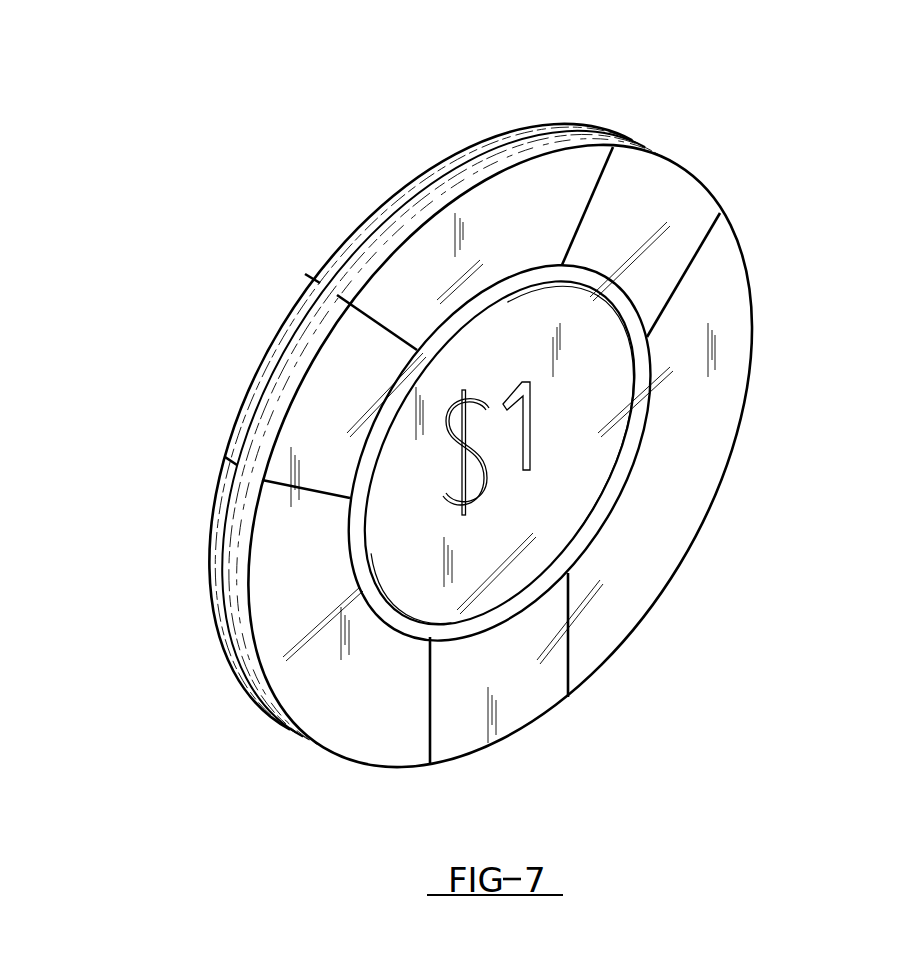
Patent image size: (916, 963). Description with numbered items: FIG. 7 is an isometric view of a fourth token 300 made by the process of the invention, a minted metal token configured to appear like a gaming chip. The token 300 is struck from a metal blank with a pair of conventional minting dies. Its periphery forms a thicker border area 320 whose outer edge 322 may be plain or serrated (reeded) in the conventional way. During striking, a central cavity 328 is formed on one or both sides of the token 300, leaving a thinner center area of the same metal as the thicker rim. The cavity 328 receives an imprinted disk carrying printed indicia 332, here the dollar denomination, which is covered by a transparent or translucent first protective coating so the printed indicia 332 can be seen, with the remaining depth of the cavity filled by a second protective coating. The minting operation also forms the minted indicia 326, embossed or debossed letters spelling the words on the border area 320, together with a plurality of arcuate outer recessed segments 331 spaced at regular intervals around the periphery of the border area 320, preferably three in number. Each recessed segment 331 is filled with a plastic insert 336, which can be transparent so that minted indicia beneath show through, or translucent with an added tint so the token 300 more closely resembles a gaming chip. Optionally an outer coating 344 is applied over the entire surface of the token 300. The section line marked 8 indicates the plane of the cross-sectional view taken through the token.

The token 300 is at (822, 375).
The border area 320 is at (477, 207).
The edge 322 is at (423, 193).
The minted indicia 326 is at (552, 167).
The central cavity 328 is at (568, 545).
The arcuate outer recessed segments 331 is at (380, 323).
The printed indicia 332 is at (530, 458).
The plastic insert 336 is at (627, 173).
The outer coating 344 is at (400, 550).
The section line 8- 8 is at (122, 665).